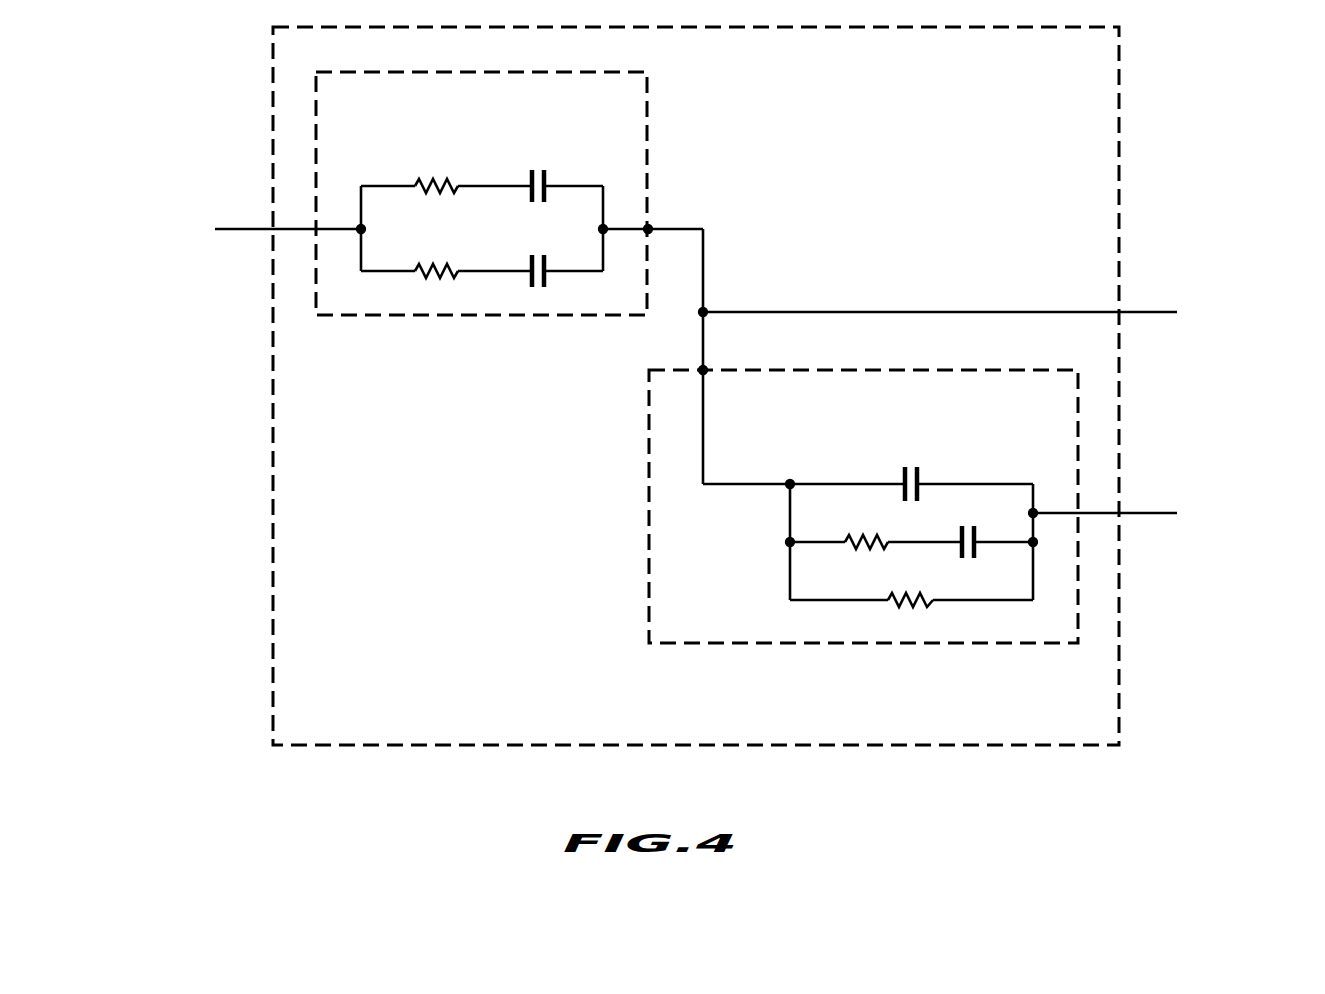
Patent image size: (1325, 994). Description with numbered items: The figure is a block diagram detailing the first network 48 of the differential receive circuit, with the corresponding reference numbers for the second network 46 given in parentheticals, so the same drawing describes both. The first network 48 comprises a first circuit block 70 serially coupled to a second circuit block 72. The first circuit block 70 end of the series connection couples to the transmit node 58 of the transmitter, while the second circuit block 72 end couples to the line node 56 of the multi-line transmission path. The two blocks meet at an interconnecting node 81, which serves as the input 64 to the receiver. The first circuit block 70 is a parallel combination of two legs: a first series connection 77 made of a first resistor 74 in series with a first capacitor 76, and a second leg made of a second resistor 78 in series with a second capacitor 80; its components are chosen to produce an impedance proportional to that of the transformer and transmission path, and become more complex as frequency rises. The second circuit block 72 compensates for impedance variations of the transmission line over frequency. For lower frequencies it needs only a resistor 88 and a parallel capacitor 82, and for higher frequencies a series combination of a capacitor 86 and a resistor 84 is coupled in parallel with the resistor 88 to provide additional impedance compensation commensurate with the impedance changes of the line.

The second network 46 is at (696, 386).
The first network 48 is at (696, 386).
The line node 56 is at (1137, 513).
The second node 58 is at (226, 233).
The first receiver input 64 is at (1004, 309).
The first circuit block 70 is at (619, 139).
The second circuit block 72 is at (1049, 439).
The first resistor 74 is at (432, 192).
The first capacitor 76 is at (535, 202).
The first series connection 77 is at (456, 299).
The second resistor 78 is at (457, 277).
The second capacitor 80 is at (545, 283).
The interconnecting node 81 is at (703, 312).
The parallel capacitor 82 is at (915, 499).
The resistor 84 is at (858, 548).
The capacitor 86 is at (973, 556).
The resistor 88 is at (898, 605).